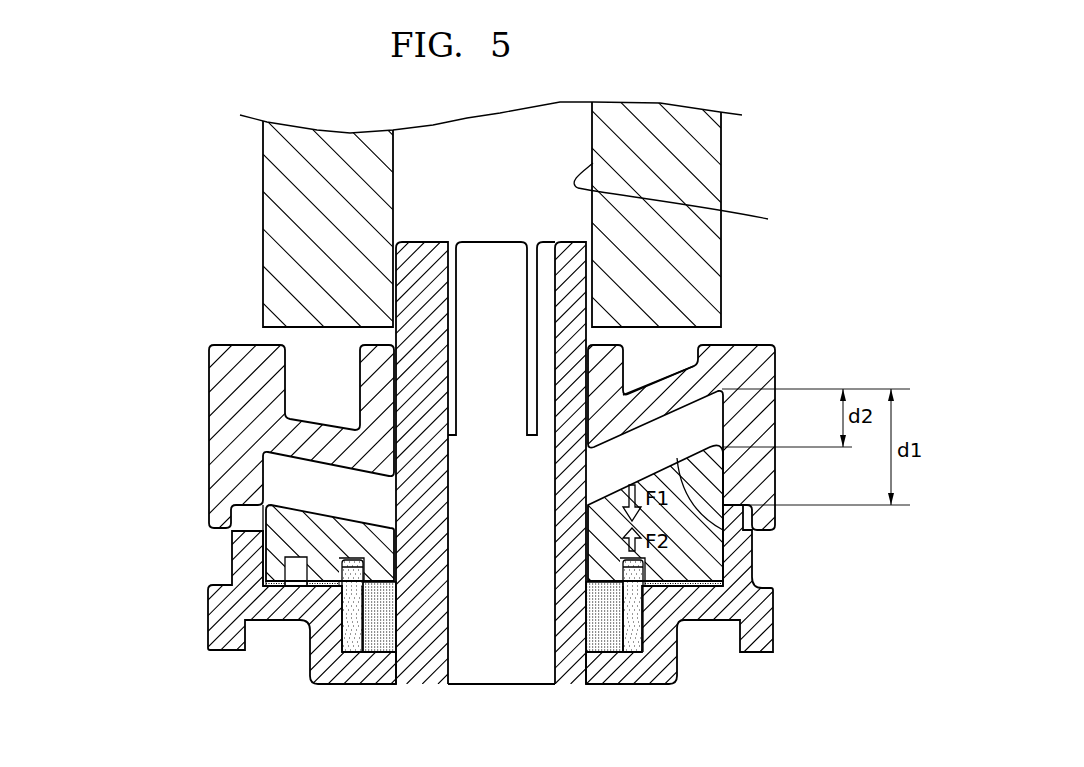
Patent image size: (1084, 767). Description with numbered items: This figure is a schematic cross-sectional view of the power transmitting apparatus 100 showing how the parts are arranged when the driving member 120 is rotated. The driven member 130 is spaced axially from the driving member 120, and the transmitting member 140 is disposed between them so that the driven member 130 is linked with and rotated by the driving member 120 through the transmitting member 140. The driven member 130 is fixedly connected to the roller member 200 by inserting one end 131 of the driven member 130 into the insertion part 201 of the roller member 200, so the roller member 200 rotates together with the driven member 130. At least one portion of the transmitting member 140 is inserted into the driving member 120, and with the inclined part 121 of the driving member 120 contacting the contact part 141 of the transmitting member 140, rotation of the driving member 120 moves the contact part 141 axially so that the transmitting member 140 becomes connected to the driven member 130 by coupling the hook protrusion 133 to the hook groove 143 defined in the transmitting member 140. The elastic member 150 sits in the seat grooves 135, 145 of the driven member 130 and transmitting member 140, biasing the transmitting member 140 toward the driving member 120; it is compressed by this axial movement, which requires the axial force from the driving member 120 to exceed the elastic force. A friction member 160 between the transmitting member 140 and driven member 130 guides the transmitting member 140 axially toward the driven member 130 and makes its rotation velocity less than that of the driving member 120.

The power transmitting apparatus 100 is at (474, 492).
The driving member 120 is at (192, 390).
The inclined part 121 is at (713, 420).
The driven member 130 is at (459, 492).
The one end of the driven member 131 is at (574, 341).
The hook protrusion 133 is at (297, 571).
The seat groove 135 is at (387, 657).
The transmitting member 140 is at (273, 520).
The contact part 141 is at (722, 529).
The hook groove 143 is at (272, 553).
The seat groove 145 is at (320, 583).
The elastic member 150 is at (345, 624).
The friction member 160 is at (368, 643).
The roller member 200 is at (740, 163).
The insertion part 201 is at (695, 199).